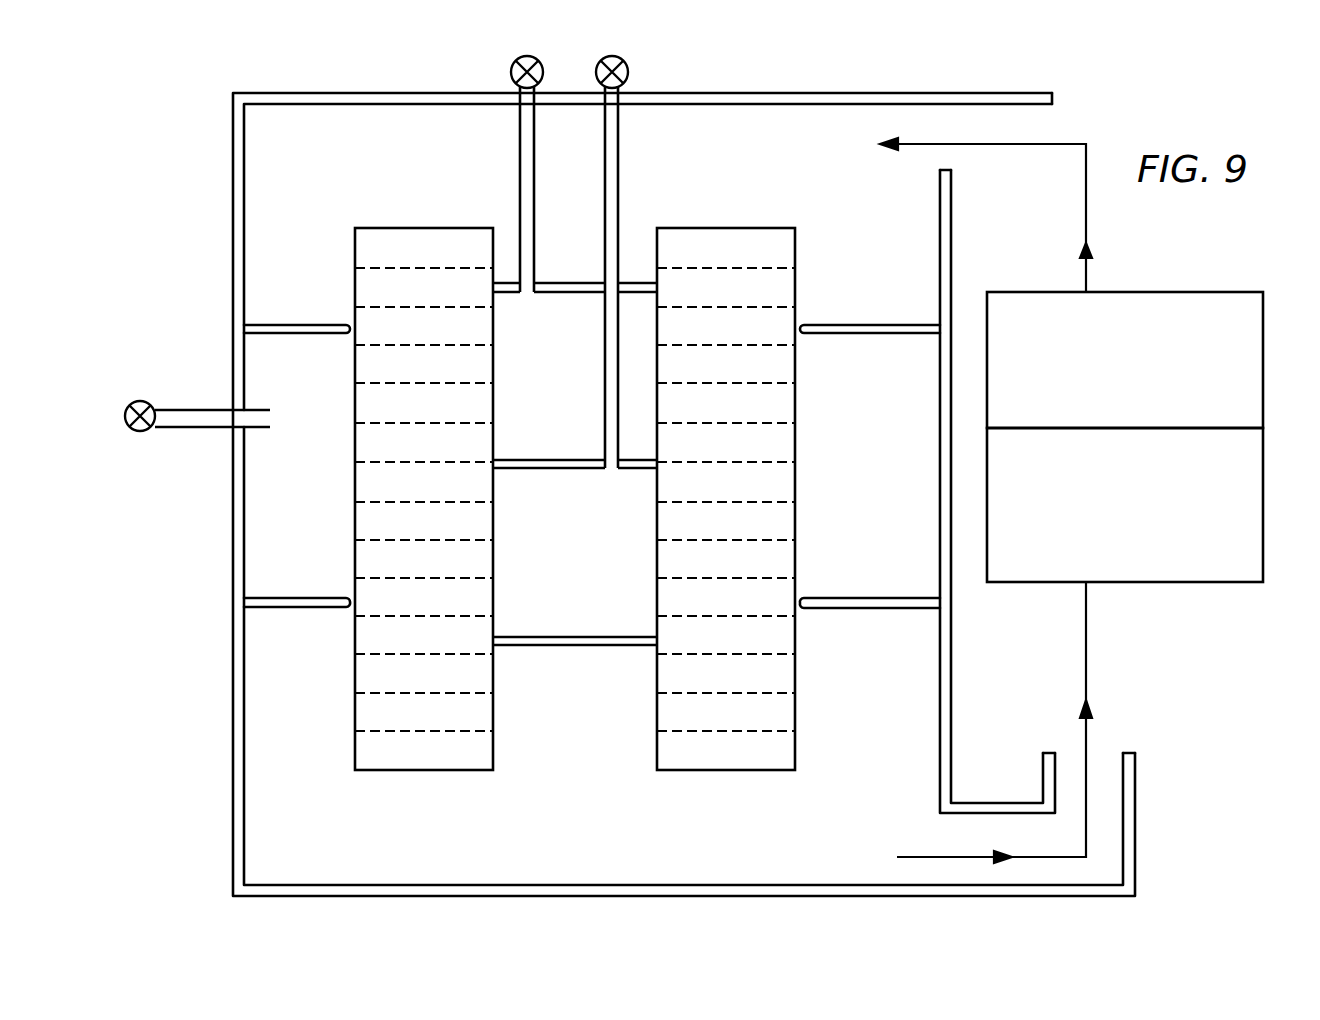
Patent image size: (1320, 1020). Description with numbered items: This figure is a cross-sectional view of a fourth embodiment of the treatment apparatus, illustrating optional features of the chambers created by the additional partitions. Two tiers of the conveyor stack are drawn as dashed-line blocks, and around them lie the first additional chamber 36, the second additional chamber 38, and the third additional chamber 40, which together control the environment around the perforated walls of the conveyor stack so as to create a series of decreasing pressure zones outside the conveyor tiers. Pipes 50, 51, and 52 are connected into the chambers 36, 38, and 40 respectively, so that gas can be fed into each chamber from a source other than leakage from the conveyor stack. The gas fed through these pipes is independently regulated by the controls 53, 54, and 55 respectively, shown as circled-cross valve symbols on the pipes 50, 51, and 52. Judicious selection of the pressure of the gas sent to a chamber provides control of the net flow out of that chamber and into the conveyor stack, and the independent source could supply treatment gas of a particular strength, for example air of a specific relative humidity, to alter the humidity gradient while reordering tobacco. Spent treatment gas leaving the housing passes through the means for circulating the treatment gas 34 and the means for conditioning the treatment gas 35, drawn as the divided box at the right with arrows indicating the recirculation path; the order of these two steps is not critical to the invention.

The means for circulating the treatment gas 34 is at (1112, 512).
The means for conditioning the treatment gas 35 is at (1114, 369).
The first additional chamber 36 is at (537, 380).
The second additional chamber 38 is at (564, 565).
The third additional chamber 40 is at (308, 370).
The pipe 50 is at (518, 101).
The pipe 51 is at (621, 97).
The pipe 52 is at (192, 408).
The control 53 is at (511, 72).
The control 54 is at (628, 75).
The control 55 is at (147, 402).